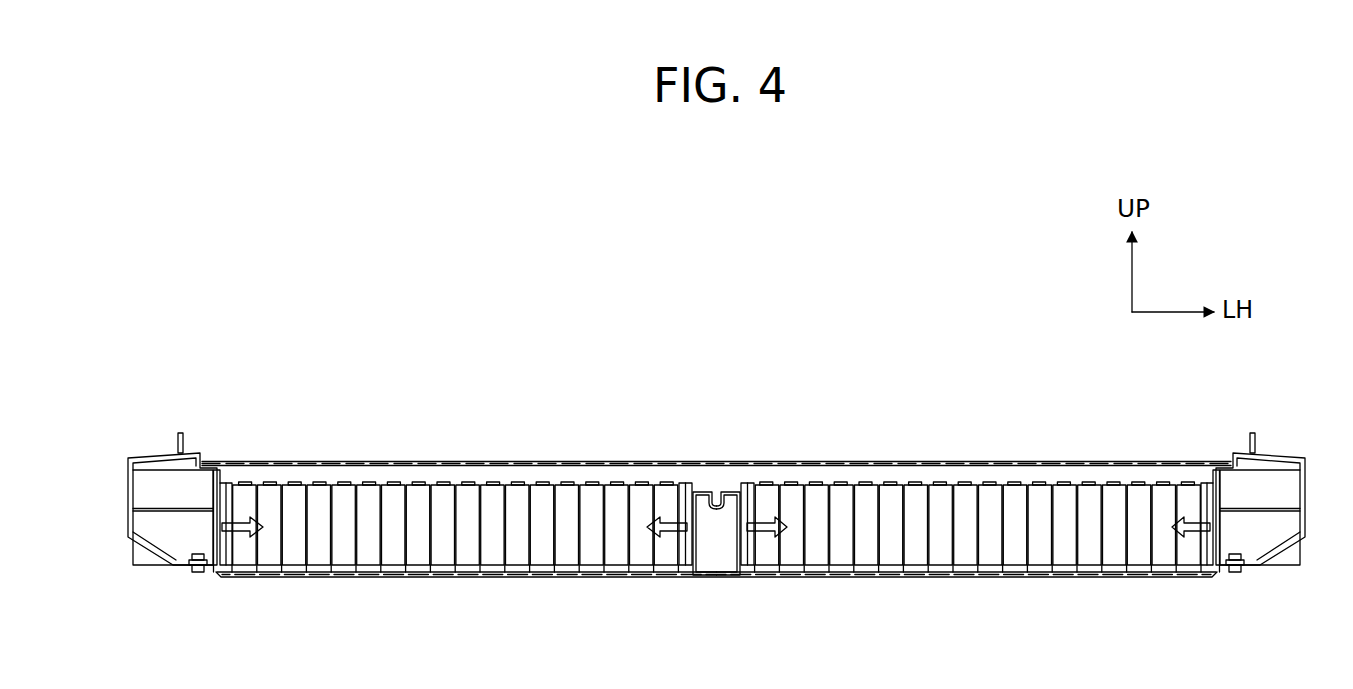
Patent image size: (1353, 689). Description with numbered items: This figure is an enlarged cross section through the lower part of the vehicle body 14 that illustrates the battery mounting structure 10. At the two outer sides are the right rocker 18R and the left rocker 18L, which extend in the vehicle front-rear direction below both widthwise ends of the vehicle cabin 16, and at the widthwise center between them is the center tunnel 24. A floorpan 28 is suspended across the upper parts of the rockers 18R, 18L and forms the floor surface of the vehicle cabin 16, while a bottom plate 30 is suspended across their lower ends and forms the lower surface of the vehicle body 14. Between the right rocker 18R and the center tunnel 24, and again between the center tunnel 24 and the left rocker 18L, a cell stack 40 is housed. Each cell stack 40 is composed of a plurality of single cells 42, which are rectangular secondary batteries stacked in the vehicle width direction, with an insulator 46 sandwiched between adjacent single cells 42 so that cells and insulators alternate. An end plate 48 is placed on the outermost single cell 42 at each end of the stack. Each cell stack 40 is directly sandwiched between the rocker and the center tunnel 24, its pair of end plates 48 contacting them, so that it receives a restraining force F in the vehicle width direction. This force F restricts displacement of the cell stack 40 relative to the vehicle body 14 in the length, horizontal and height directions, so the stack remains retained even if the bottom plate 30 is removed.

The battery mounting structure 10 is at (566, 304).
The vehicle body 14 is at (214, 611).
The vehicle cabin 16 is at (707, 270).
The right rocker 18R is at (157, 455).
The left rocker 18L is at (1258, 455).
The center tunnel 24 is at (730, 490).
The floorpan 28 is at (628, 461).
The bottom plate 30 is at (708, 578).
The cell stack 40 is at (468, 473).
The single cell 42 is at (387, 497).
The insulator 46 is at (403, 570).
The end plate 48 is at (220, 483).
The restraining force F is at (238, 537).